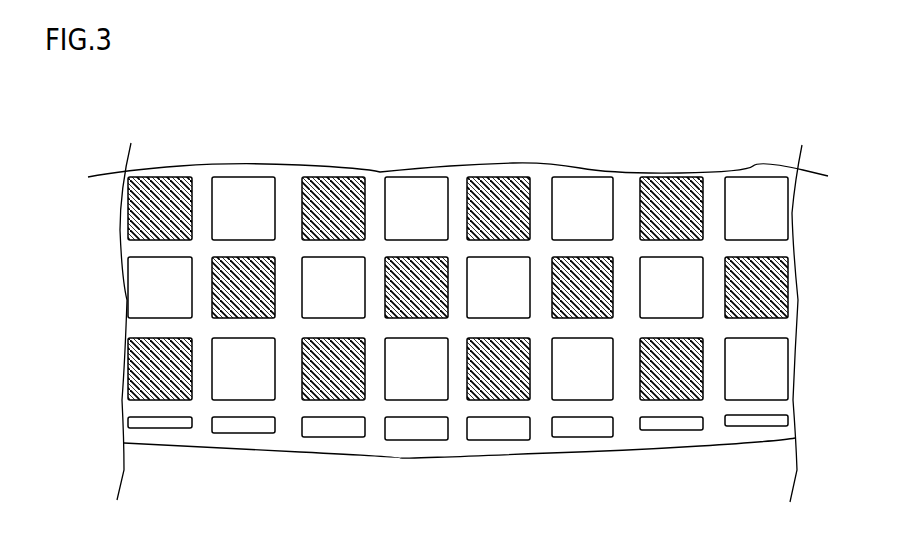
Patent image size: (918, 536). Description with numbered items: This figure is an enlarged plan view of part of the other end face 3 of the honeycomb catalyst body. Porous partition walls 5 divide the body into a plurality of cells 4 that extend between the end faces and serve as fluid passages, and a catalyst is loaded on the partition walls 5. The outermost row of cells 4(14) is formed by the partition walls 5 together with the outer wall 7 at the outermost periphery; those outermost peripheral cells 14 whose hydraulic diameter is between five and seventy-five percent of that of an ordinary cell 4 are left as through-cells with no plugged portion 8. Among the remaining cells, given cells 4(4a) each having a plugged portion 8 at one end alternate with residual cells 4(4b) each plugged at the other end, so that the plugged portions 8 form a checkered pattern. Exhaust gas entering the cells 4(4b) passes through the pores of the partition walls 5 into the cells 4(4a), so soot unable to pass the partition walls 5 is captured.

The other end face 3 is at (594, 166).
The cell 4 is at (433, 425).
The given cell 4a is at (587, 400).
The residual cell 4b is at (497, 398).
The outermost peripheral cell 14 is at (330, 433).
The partition wall 5 is at (380, 206).
The outer wall 7 is at (399, 448).
The plugged portion 8 is at (500, 198).